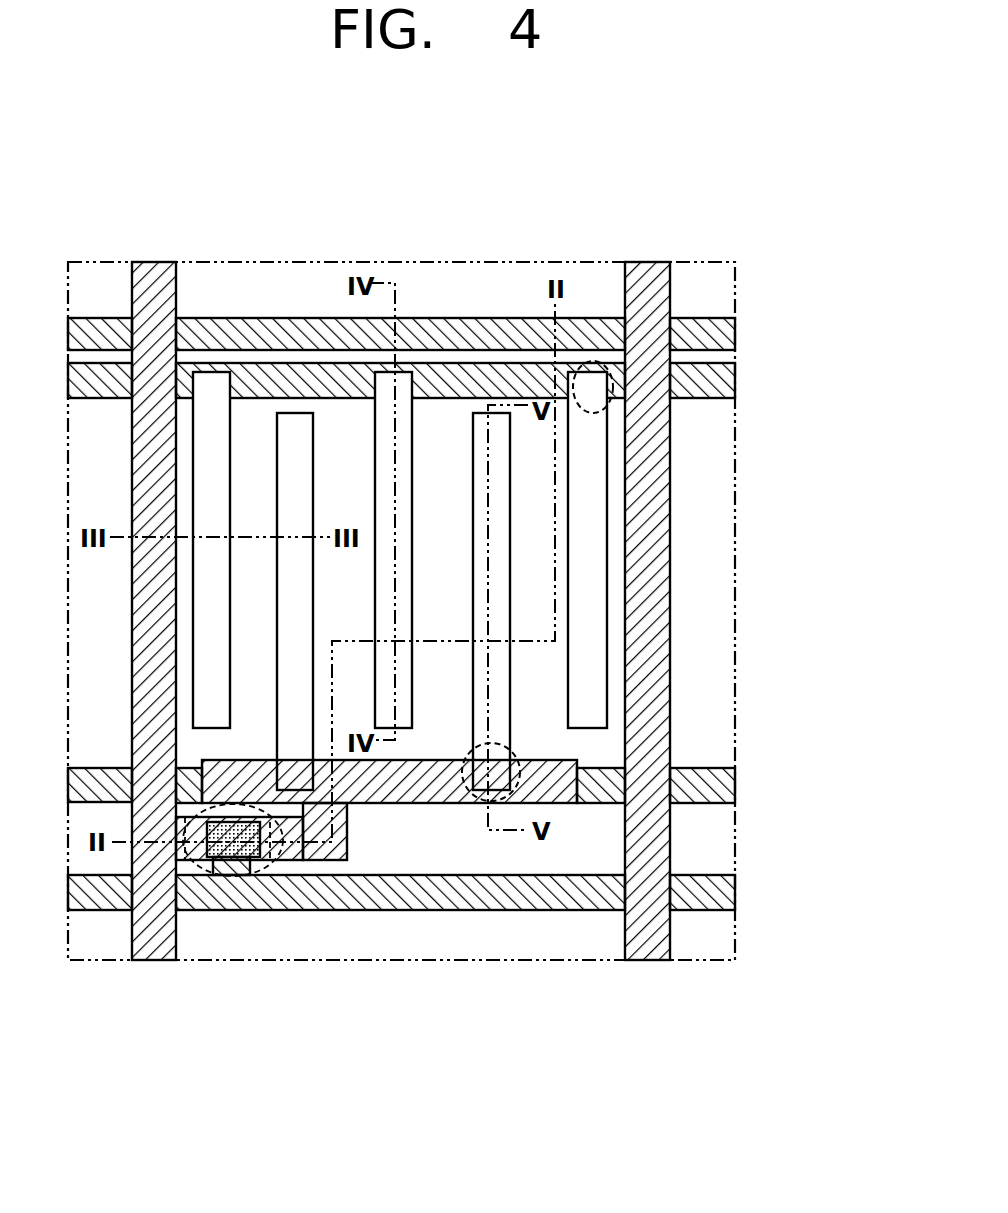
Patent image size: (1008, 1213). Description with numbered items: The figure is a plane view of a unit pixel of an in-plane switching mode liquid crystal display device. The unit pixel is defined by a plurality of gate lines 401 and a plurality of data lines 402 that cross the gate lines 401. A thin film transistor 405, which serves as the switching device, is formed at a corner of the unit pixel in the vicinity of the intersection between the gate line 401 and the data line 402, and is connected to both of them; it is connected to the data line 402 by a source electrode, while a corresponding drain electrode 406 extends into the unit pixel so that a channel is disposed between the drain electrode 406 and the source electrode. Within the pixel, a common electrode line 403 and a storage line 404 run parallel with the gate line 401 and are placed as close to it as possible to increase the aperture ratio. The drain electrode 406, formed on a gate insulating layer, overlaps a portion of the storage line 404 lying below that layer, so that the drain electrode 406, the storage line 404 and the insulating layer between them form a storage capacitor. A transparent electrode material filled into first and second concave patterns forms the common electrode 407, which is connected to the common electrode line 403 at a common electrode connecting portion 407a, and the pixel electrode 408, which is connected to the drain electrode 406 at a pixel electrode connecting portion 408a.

The gate line 401 is at (705, 334).
The data line 402 is at (648, 960).
The common electrode line 403 is at (710, 381).
The storage line 404 is at (705, 786).
The thin film transistor 405 is at (232, 912).
The drain electrode 406 is at (425, 805).
The common electrode 407 is at (607, 550).
The common electrode connecting portion 407a is at (575, 358).
The pixel electrode 408 is at (513, 707).
The pixel electrode connecting portion 408a is at (513, 753).